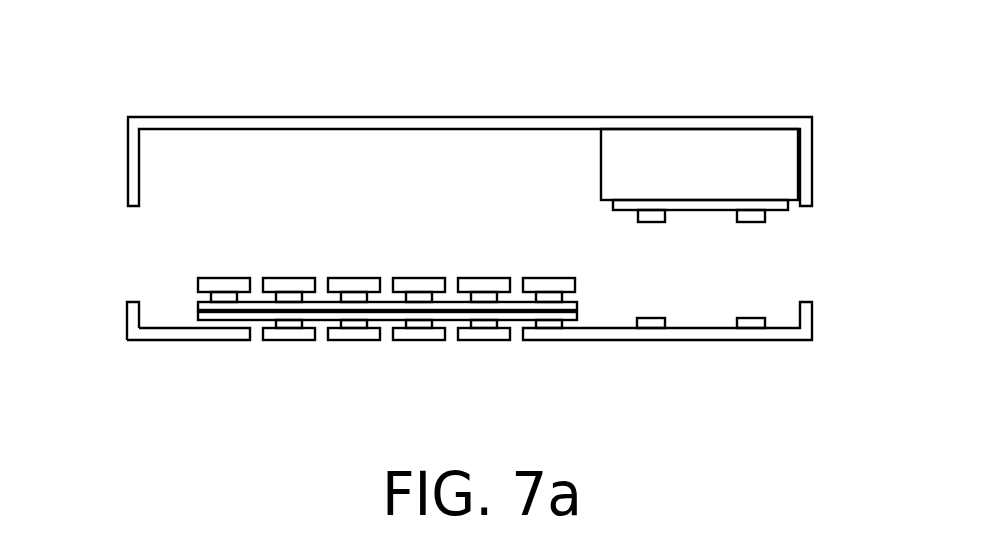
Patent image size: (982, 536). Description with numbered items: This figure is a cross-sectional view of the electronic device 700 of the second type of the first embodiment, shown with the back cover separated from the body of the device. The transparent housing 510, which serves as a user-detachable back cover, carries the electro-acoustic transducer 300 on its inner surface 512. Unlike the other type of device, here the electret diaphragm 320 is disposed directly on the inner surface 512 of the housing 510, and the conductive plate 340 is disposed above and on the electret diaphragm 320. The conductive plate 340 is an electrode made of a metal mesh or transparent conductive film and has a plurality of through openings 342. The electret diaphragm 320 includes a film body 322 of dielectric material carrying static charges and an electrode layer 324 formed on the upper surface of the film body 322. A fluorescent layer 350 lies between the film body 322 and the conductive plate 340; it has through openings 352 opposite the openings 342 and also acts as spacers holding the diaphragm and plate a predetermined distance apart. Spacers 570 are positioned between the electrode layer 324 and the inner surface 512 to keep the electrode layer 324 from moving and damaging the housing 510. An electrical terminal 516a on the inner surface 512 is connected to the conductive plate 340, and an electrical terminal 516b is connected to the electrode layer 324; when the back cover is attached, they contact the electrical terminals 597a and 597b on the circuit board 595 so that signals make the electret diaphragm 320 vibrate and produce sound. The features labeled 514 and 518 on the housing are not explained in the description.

The electronic device 700 is at (168, 88).
The electro-acoustic transducer 300 is at (356, 275).
The conductive plate 340 is at (226, 285).
The through openings 342 is at (258, 290).
The fluorescent layer 350 is at (548, 296).
The through openings 352 is at (515, 294).
The electret diaphragm 320 is at (194, 306).
The film body 322 is at (579, 308).
The electrode layer 324 is at (580, 318).
The housing 510 is at (129, 316).
The lower housing base 518 is at (190, 343).
The inner surface 512 is at (779, 322).
The lower contact pads 514 is at (258, 338).
The spacers 570 is at (291, 324).
The electrical terminal 516a is at (656, 325).
The electrical terminal 516b is at (755, 325).
The circuit board 595 is at (778, 206).
The electrical terminal 597a is at (650, 215).
The electrical terminal 597b is at (752, 215).